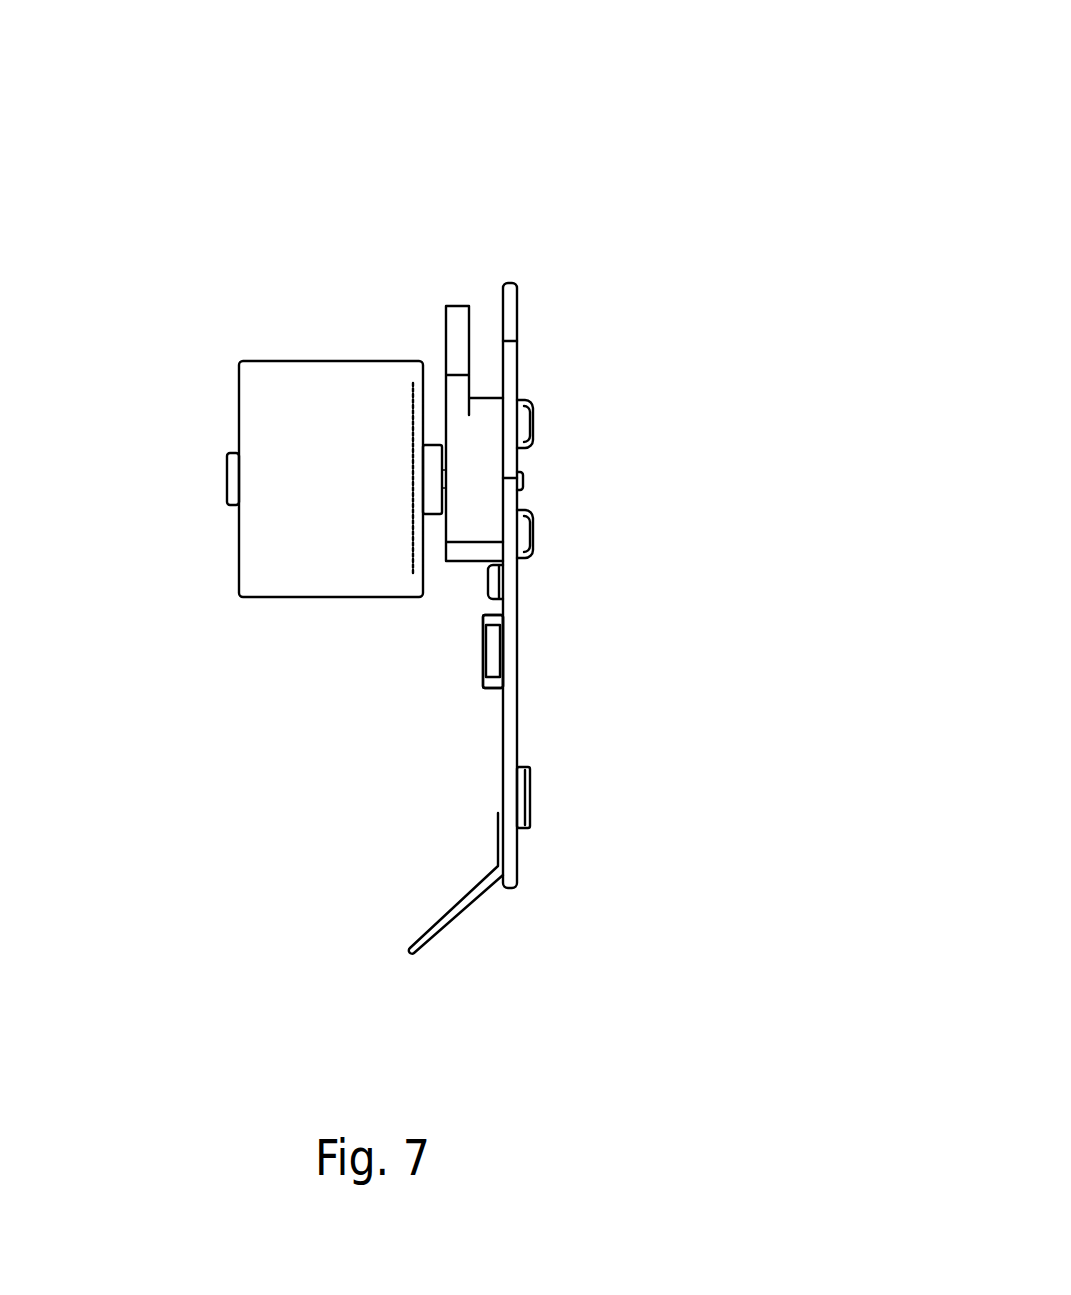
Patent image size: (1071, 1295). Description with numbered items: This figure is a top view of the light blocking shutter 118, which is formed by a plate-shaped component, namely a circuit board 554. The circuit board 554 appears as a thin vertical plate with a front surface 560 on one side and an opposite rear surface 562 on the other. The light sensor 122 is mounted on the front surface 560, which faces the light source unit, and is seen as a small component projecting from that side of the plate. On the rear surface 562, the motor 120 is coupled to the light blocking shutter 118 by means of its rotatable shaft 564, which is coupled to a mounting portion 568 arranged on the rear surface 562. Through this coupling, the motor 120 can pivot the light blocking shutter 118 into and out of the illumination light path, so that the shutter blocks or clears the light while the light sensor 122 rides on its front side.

The light blocking shutter 118 is at (762, 40).
The motor 120 is at (250, 377).
The light sensor 122 is at (533, 808).
The circuit board 554 is at (517, 638).
The front surface 560 is at (518, 385).
The rear surface 562 is at (503, 753).
The rotatable shaft 564 is at (227, 478).
The mounting portion 568 is at (478, 440).